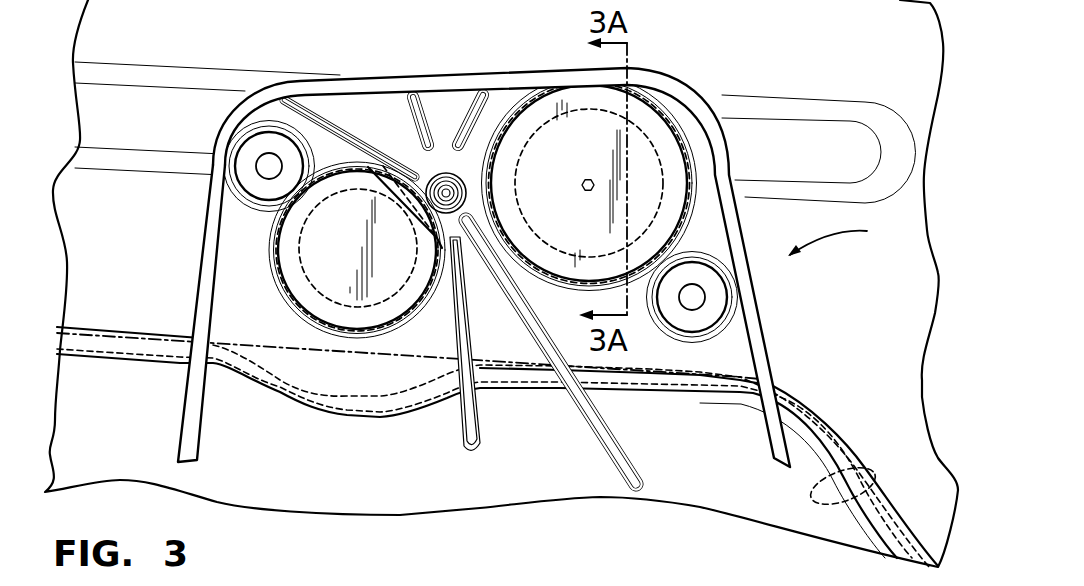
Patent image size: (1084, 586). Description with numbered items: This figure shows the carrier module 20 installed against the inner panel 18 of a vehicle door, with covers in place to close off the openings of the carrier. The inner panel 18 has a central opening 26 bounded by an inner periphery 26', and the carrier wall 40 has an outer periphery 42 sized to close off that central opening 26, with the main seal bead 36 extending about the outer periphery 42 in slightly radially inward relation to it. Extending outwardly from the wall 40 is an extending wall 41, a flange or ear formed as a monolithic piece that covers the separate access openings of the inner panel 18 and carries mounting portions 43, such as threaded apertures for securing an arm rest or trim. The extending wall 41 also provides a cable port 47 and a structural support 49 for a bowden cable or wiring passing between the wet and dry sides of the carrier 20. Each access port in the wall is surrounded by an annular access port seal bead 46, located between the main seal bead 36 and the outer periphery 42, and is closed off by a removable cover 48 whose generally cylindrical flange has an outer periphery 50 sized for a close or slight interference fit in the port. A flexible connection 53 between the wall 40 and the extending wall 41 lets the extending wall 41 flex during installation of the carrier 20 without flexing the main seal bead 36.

The inner panel 18 is at (845, 311).
The carrier module 20 is at (841, 239).
The central opening 26 is at (497, 460).
The inner periphery 26' is at (493, 456).
The main seal bead 36 is at (880, 484).
The carrier wall 40 is at (252, 292).
The extending wall 41 is at (381, 79).
The outer periphery 42 is at (203, 248).
The mounting portions 43 is at (273, 166).
The access port seal beads 46 is at (352, 172).
The cable port 47 is at (447, 196).
The cover 48 is at (350, 262).
The structural support 49 is at (450, 114).
The outer periphery of cover flange 50 is at (687, 192).
The flexible connection 53 is at (267, 342).